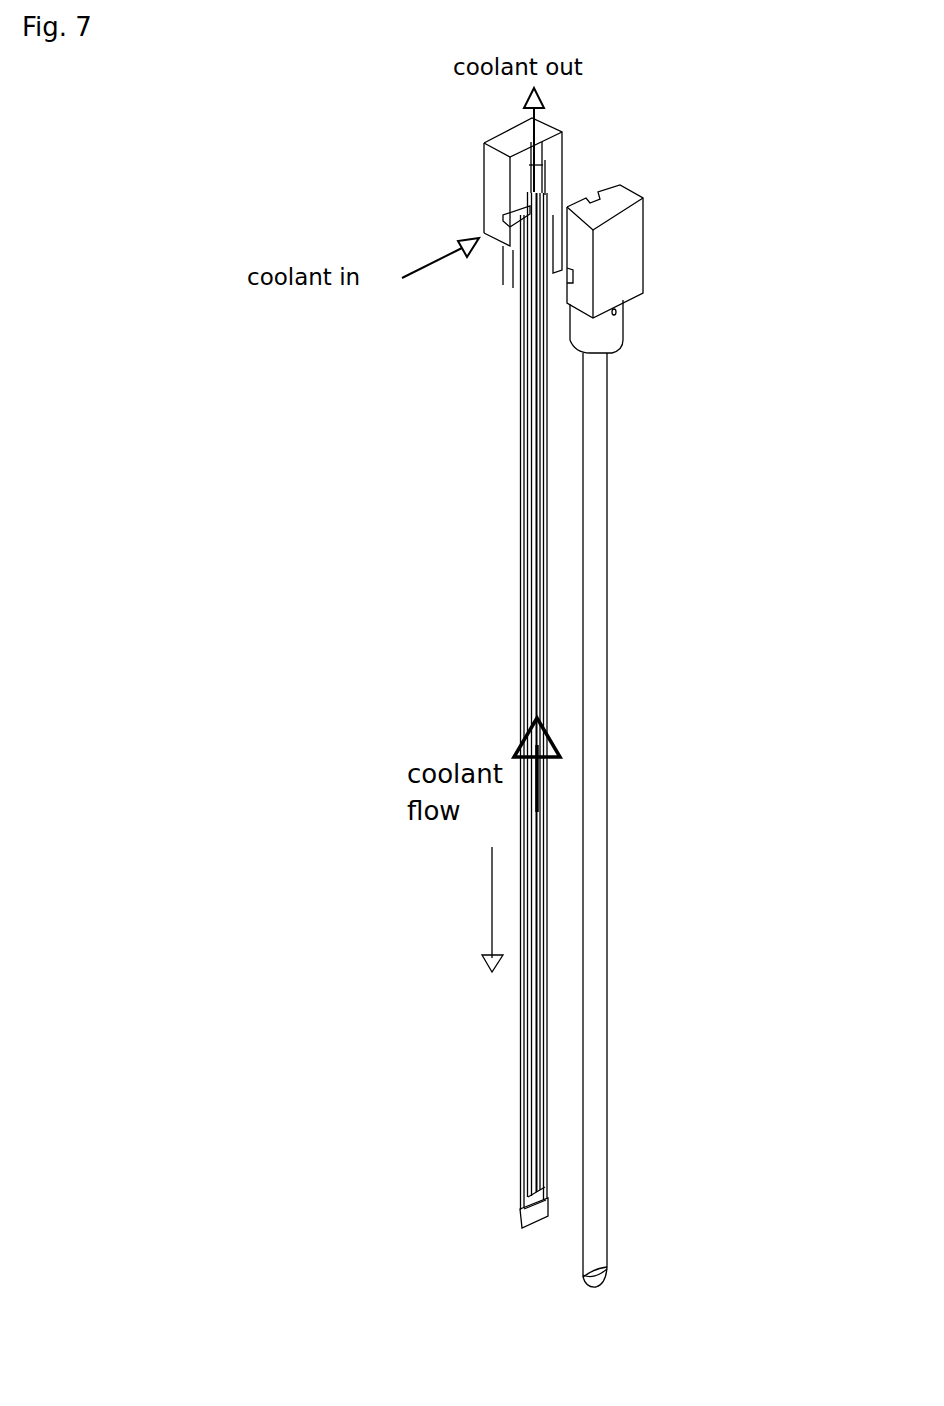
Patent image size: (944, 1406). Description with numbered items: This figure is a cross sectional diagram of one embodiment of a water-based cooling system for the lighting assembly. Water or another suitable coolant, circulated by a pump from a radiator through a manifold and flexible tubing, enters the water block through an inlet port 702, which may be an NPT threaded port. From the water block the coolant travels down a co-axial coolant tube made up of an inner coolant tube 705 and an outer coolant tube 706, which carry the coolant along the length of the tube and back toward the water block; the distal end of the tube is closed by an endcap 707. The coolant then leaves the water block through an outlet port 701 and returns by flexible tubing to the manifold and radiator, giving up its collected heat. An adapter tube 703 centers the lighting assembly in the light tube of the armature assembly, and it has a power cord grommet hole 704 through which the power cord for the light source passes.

The port 701 is at (533, 141).
The port 702 is at (498, 215).
The adapter tube 703 is at (497, 278).
The power cord grommet hole 704 is at (625, 318).
The inner coolant tube 705 is at (520, 598).
The outer coolant tube 706 is at (610, 573).
The endcap 707 is at (510, 1227).